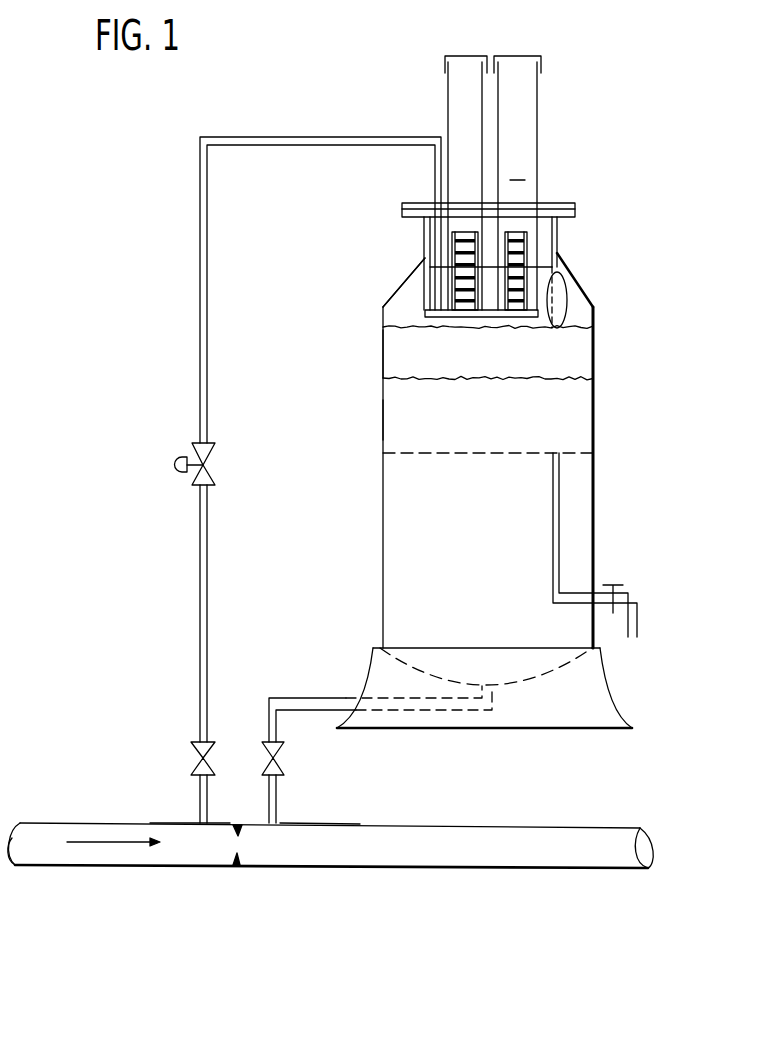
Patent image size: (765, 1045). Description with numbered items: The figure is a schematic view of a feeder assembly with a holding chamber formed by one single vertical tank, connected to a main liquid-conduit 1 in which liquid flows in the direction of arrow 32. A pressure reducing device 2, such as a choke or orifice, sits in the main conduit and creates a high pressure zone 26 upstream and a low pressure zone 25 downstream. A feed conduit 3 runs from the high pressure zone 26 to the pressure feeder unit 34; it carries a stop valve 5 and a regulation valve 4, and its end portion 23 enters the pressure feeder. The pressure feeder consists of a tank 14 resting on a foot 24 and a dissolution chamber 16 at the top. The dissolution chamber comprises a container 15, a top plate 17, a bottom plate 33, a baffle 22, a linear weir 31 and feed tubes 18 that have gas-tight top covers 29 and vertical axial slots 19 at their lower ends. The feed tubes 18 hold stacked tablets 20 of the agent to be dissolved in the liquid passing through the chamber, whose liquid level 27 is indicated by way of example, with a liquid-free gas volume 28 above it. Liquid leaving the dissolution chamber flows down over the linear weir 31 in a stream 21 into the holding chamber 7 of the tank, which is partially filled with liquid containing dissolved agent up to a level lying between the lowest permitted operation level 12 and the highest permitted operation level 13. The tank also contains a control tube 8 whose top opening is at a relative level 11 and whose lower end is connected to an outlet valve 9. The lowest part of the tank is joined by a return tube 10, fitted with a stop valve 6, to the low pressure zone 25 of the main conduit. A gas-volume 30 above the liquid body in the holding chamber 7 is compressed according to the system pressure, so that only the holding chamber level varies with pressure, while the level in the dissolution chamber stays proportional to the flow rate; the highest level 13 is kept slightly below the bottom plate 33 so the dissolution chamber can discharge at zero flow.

The main liquid-conduit 1 is at (133, 873).
The pressure reducing device 2 is at (252, 848).
The feed conduit 3 is at (207, 563).
The regulation valve 4 is at (213, 470).
The stop valve 5 is at (190, 757).
The stop valve 6 is at (283, 763).
The holding chamber 7 is at (385, 563).
The control tube 8 is at (557, 527).
The outlet valve 9 is at (623, 585).
The return tube 10 is at (303, 697).
The relative level 11 is at (550, 452).
The lowest permitted operation level 12 is at (575, 377).
The highest permitted operation level 13 is at (427, 330).
The tank 14 is at (383, 423).
The container 15 is at (423, 283).
The dissolution chamber 16 is at (548, 242).
The top plate 17 is at (565, 203).
The feed tubes 18 is at (527, 107).
The vertical axial slots 19 is at (516, 212).
The stacked tablets 20 is at (520, 280).
The stream 21 is at (567, 305).
The baffle 22 is at (423, 315).
The end portion 23 is at (435, 230).
The foot 24 is at (607, 718).
The low pressure zone 25 is at (310, 840).
The high pressure zone 26 is at (205, 853).
The liquid level 27 is at (484, 268).
The liquid-free gas volume 28 is at (488, 245).
The gas-tight top covers 29 is at (512, 56).
The gas-volume 30 is at (400, 300).
The linear weir 31 is at (548, 325).
The arrow 32 is at (95, 842).
The bottom plate 33 is at (457, 318).
The pressure feeder unit 34 is at (601, 113).